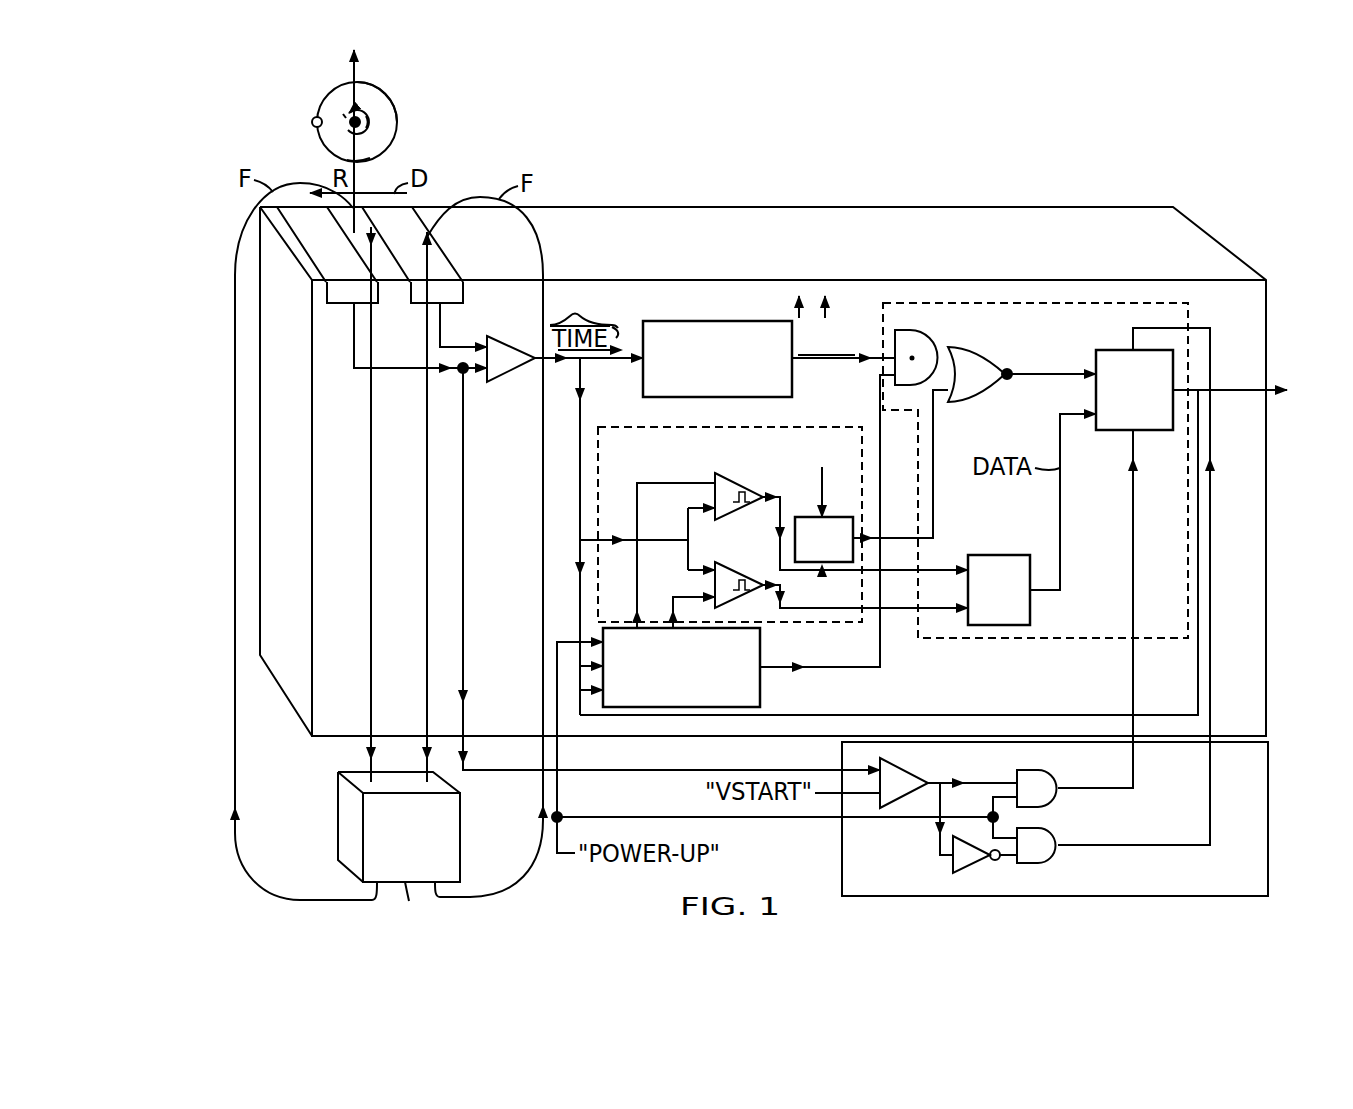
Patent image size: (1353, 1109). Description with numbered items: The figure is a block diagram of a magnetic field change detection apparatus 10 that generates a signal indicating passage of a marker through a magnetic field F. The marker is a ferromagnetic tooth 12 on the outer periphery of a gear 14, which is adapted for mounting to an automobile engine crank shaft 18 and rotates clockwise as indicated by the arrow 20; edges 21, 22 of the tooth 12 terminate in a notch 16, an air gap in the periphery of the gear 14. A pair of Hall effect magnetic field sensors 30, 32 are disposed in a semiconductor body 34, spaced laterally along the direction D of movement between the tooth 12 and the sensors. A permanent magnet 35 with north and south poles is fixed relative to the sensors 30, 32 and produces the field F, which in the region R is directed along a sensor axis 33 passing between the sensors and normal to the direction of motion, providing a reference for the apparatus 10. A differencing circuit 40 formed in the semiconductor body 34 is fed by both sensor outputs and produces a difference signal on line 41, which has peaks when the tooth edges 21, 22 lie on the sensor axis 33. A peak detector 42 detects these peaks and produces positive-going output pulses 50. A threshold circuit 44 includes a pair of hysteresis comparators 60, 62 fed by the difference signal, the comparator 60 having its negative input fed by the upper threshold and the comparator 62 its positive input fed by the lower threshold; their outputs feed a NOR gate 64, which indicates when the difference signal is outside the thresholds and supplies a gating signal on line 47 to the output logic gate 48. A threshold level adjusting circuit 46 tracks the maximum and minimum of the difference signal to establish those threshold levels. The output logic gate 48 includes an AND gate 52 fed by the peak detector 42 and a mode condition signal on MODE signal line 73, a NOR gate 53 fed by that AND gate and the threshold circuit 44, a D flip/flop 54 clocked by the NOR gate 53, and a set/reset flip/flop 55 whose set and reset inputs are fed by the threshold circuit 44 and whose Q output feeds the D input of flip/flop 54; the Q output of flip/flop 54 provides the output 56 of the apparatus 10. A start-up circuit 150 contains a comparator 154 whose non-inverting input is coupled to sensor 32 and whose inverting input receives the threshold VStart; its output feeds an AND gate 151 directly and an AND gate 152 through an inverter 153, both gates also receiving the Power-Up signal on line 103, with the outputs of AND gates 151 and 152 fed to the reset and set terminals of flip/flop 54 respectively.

The apparatus 10 is at (882, 138).
The tooth 12 is at (398, 115).
The gear 14 is at (396, 108).
The notch 16 is at (316, 120).
The crank shaft 18 is at (343, 130).
The arrow 20 is at (369, 129).
The edge of tooth 21 is at (357, 163).
The edge of tooth 22 is at (357, 96).
The magnetic field sensor 30 is at (409, 233).
The magnetic field sensor 32 is at (324, 233).
The sensor axis 33 is at (360, 70).
The semiconductor body 34 is at (300, 649).
The permanent magnet 35 is at (422, 849).
The differencing circuit 40 is at (512, 338).
The line 41 is at (557, 370).
The peak detector 42 is at (752, 322).
The threshold circuit 44 is at (648, 427).
The threshold level adjusting circuit 46 is at (762, 687).
The line 47 is at (935, 425).
The output logic gate 48 is at (1190, 310).
The output pulses 50 is at (832, 298).
The AND gate 52 is at (883, 341).
The NOR gate 53 is at (988, 355).
The D flip/flop 54 is at (1093, 361).
The set/reset flip/flop 55 is at (1010, 555).
The output 56 is at (795, 298).
The comparator 60 is at (738, 512).
The comparator 62 is at (736, 565).
The NOR gate 64 is at (828, 517).
The MODE signal line 73 is at (768, 397).
The line 103 is at (560, 731).
The start-up circuit 150 is at (1283, 780).
The AND gate 151 is at (1055, 800).
The AND gate 152 is at (1053, 860).
The inverter 153 is at (975, 868).
The comparator 154 is at (897, 770).